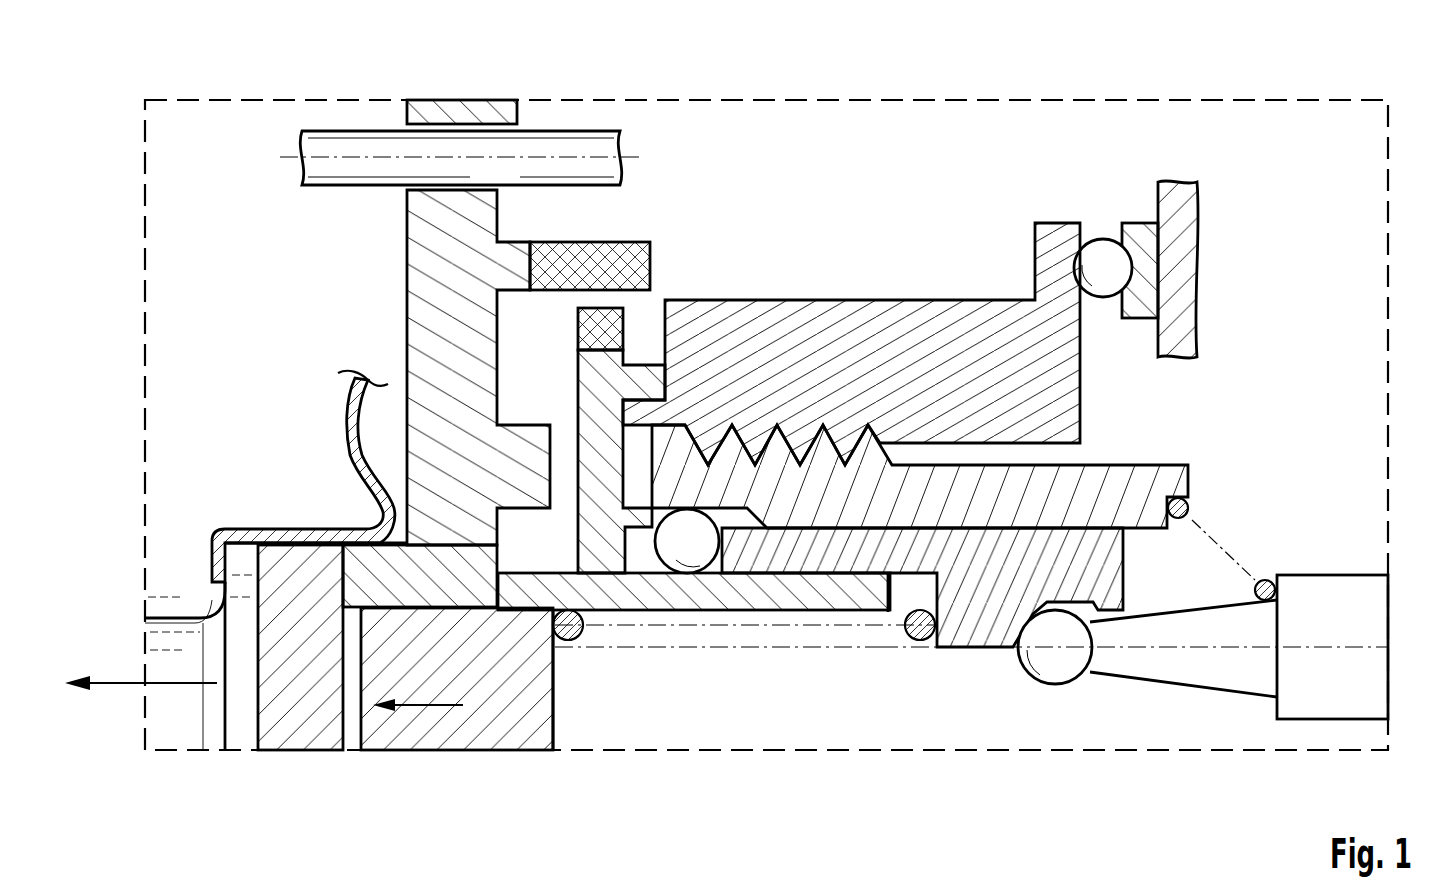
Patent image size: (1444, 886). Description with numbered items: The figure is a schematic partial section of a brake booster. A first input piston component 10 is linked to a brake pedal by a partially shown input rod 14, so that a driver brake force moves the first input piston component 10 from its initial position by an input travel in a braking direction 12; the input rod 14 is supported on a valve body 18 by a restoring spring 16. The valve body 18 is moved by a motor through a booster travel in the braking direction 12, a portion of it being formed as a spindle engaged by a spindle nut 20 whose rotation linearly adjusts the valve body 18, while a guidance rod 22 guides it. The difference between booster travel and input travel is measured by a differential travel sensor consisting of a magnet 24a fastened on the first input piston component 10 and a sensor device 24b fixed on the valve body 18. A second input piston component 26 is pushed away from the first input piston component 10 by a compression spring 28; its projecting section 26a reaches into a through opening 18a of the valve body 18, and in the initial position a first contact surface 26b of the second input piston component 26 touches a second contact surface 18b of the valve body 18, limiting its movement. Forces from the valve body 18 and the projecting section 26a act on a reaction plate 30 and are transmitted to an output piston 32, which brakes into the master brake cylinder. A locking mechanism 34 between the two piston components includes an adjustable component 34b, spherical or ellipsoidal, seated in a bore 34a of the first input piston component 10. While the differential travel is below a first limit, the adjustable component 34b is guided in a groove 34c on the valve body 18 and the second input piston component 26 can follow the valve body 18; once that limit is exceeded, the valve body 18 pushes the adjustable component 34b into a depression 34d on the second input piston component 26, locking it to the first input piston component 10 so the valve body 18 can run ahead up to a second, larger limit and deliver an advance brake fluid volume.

The first input piston component 10 is at (980, 617).
The braking direction 12 is at (173, 683).
The input rod 14 is at (1323, 690).
The restoring spring 16 is at (1227, 548).
The valve body 18 is at (450, 210).
The through opening 18a is at (423, 706).
The second contact surface 18b is at (520, 577).
The spindle nut 20 is at (873, 328).
The guidance rod 22 is at (547, 148).
The magnet 24a is at (628, 268).
The sensor device 24b is at (608, 328).
The second input piston component 26 is at (513, 693).
The projecting section 26a is at (423, 665).
The first contact surface 26b is at (490, 586).
The compression spring 28 is at (875, 625).
The reaction plate 30 is at (297, 710).
The output piston 32 is at (165, 664).
The locking mechanism 34 is at (715, 494).
The bore 34a is at (687, 535).
The adjustable component 34b is at (687, 556).
The groove 34c is at (750, 526).
The depression 34d is at (738, 590).